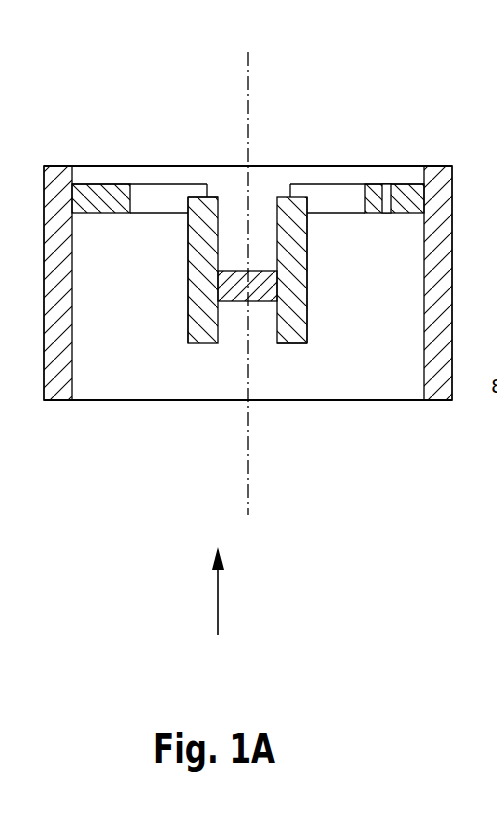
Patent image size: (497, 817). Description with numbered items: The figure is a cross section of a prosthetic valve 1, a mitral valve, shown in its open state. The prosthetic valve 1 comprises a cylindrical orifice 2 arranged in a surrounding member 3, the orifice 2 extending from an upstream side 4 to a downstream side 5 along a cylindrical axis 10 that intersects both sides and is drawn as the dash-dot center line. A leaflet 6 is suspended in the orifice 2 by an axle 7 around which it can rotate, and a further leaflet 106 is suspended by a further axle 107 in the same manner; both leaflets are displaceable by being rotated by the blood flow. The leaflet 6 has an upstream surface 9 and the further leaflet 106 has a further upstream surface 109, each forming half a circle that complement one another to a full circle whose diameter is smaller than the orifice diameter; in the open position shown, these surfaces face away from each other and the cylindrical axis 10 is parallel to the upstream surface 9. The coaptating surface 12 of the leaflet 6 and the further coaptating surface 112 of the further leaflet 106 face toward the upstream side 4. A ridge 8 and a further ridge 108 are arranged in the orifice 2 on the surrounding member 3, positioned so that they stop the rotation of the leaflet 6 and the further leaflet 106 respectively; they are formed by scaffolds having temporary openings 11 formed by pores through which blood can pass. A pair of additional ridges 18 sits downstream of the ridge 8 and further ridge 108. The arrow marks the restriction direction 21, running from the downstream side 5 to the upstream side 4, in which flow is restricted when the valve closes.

The prosthetic valve 1 is at (152, 452).
The orifice 2 is at (372, 372).
The surrounding member 3 is at (57, 400).
The upstream side 4 is at (123, 166).
The downstream side 5 is at (107, 400).
The leaflet 6 is at (197, 270).
The axle 7 is at (203, 220).
The ridge 8 is at (88, 200).
The upstream surface 9 is at (188, 240).
The cylindrical axis 10 is at (250, 65).
The temporary openings 11 is at (386, 184).
The coaptating surface 12 is at (214, 197).
The additional ridges 18 is at (233, 301).
The restriction direction 21 is at (216, 610).
The further leaflet 106 is at (298, 328).
The further axle 107 is at (292, 221).
The further ridge 108 is at (410, 205).
The further upstream surface 109 is at (308, 243).
The further coaptating surface 112 is at (289, 184).